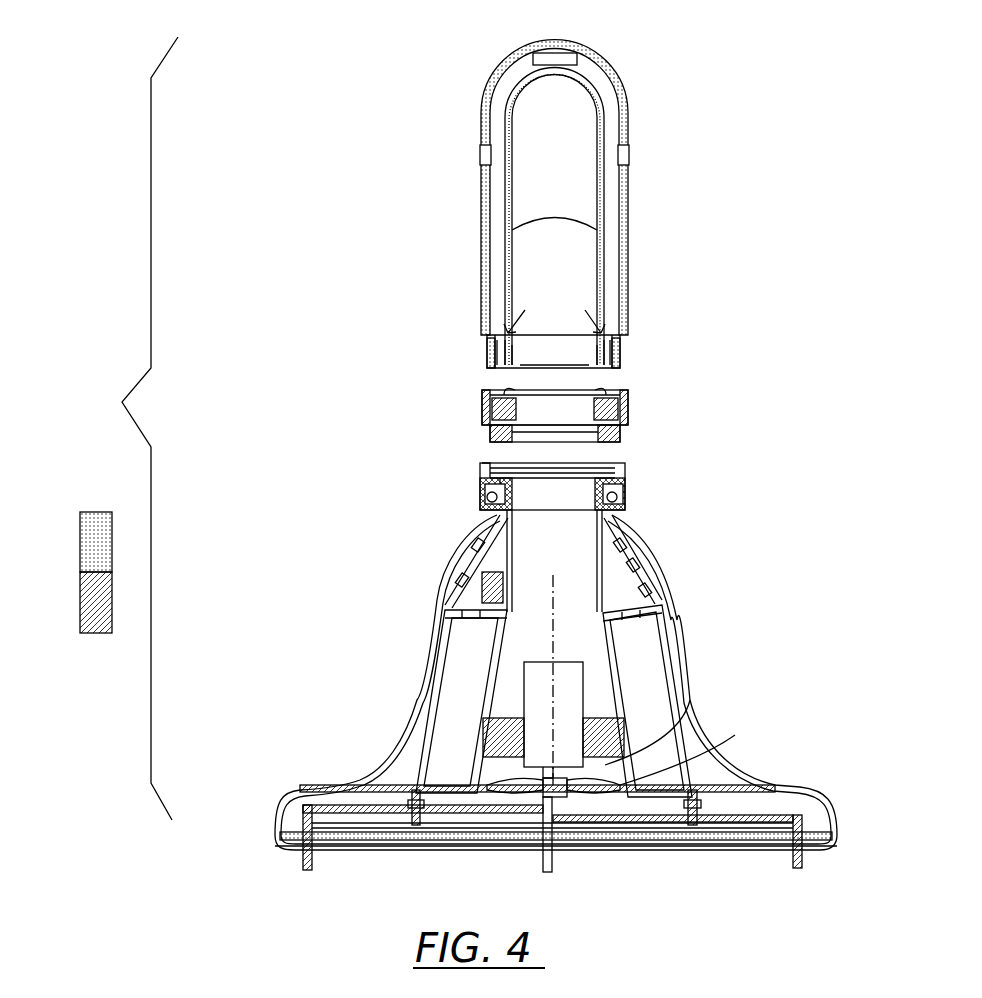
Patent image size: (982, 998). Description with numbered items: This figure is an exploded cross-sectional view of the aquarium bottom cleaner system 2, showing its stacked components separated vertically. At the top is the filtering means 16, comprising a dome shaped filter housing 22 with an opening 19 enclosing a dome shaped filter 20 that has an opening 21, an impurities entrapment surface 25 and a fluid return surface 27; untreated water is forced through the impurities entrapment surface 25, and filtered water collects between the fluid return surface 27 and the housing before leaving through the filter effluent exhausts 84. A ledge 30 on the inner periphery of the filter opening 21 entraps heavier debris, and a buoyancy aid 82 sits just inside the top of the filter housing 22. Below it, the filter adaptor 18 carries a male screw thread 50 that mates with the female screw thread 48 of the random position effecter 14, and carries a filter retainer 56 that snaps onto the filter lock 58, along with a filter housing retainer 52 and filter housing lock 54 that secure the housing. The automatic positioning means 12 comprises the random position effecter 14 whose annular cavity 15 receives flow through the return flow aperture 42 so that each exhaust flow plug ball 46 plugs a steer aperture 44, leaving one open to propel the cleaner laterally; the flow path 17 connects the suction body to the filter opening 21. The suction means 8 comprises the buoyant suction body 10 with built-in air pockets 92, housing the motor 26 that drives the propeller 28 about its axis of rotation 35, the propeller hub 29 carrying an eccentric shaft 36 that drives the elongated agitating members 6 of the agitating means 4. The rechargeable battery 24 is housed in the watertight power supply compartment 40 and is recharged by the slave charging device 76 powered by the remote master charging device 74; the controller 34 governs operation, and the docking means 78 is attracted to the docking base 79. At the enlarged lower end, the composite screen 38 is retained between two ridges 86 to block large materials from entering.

The aquarium bottom cleaner system 2 is at (116, 420).
The agitating means 4 is at (270, 840).
The elongated agitating member 6 is at (335, 800).
The suction means 8 is at (335, 665).
The suction body 10 is at (770, 785).
The automatic positioning means 12 is at (395, 472).
The random position effecter 14 is at (625, 490).
The annular cavity 15 is at (503, 485).
The filtering means 16 is at (420, 93).
The flow path 17 is at (555, 500).
The filter adaptor 18 is at (400, 408).
The filter housing opening 19 is at (625, 350).
The filter 20 is at (608, 132).
The filter opening 21 is at (510, 360).
The filter housing 22 is at (588, 60).
The rechargeable battery 24 is at (446, 660).
The impurities entrapment surface of filter 25 is at (555, 205).
The motor 26 is at (583, 670).
The fluid return surface of filter 27 is at (600, 190).
The propeller 28 is at (620, 785).
The propeller hub 29 is at (690, 745).
The ledge 30 is at (595, 312).
The controller 34 is at (482, 585).
The propeller axis of rotation 35 is at (553, 690).
The eccentric shaft 36 is at (543, 868).
The composite screen 38 is at (360, 845).
The power supply compartment 40 is at (437, 610).
The return flow aperture 42 is at (490, 466).
The steer aperture 44 is at (485, 492).
The exhaust flow plug ball 46 is at (487, 497).
The female screw thread 48 is at (615, 468).
The male screw thread 50 is at (620, 435).
The filter housing retainer 52 is at (628, 408).
The filter housing lock 54 is at (614, 345).
The filter retainer 56 is at (605, 392).
The filter lock 58 is at (600, 338).
The master charging device 74 is at (80, 600).
The slave charging device 76 is at (470, 560).
The docking means 78 is at (470, 548).
The docking base 79 is at (80, 540).
The buoyancy aid 82 is at (555, 52).
The filter effluent exhaust 84 is at (480, 155).
The ridge 86 is at (282, 825).
The air pocket 92 is at (695, 720).